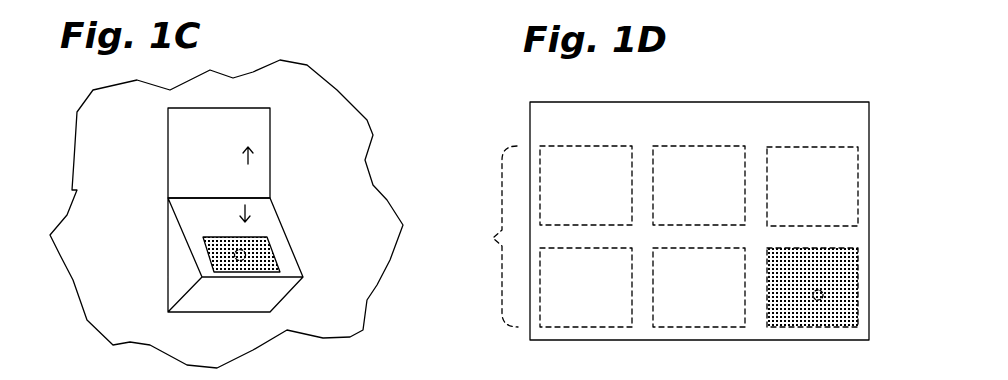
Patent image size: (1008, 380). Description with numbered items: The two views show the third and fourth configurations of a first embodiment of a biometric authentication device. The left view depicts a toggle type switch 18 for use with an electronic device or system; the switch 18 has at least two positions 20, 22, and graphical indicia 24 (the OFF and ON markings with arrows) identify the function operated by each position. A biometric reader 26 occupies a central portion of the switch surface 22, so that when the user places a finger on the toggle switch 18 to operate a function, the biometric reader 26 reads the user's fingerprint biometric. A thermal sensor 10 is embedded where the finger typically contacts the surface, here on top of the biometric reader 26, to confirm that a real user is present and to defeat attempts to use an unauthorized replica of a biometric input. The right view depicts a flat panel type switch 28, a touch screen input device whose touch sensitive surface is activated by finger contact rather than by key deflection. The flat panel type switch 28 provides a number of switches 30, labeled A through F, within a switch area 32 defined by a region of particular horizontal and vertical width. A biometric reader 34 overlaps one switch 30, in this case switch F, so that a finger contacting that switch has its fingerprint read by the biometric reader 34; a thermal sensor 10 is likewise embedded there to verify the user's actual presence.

In FIG. 1C, the thermal sensor 10 is at (238, 257).
In FIG. 1D, the thermal sensor 10 is at (815, 296).
In FIG. 1C, the toggle type switch 18 is at (190, 132).
In FIG. 1C, the switch position 20 is at (258, 183).
In FIG. 1C, the switch position 22 is at (258, 215).
In FIG. 1C, the graphical indicia 24 is at (238, 145).
In FIG. 1C, the biometric reader 26 is at (270, 262).
In FIG. 1D, the flat panel type switch 28 is at (540, 100).
In FIG. 1D, the switch 30 is at (835, 183).
In FIG. 1D, the switch area 32 is at (491, 238).
In FIG. 1D, the biometric reader 34 is at (835, 272).